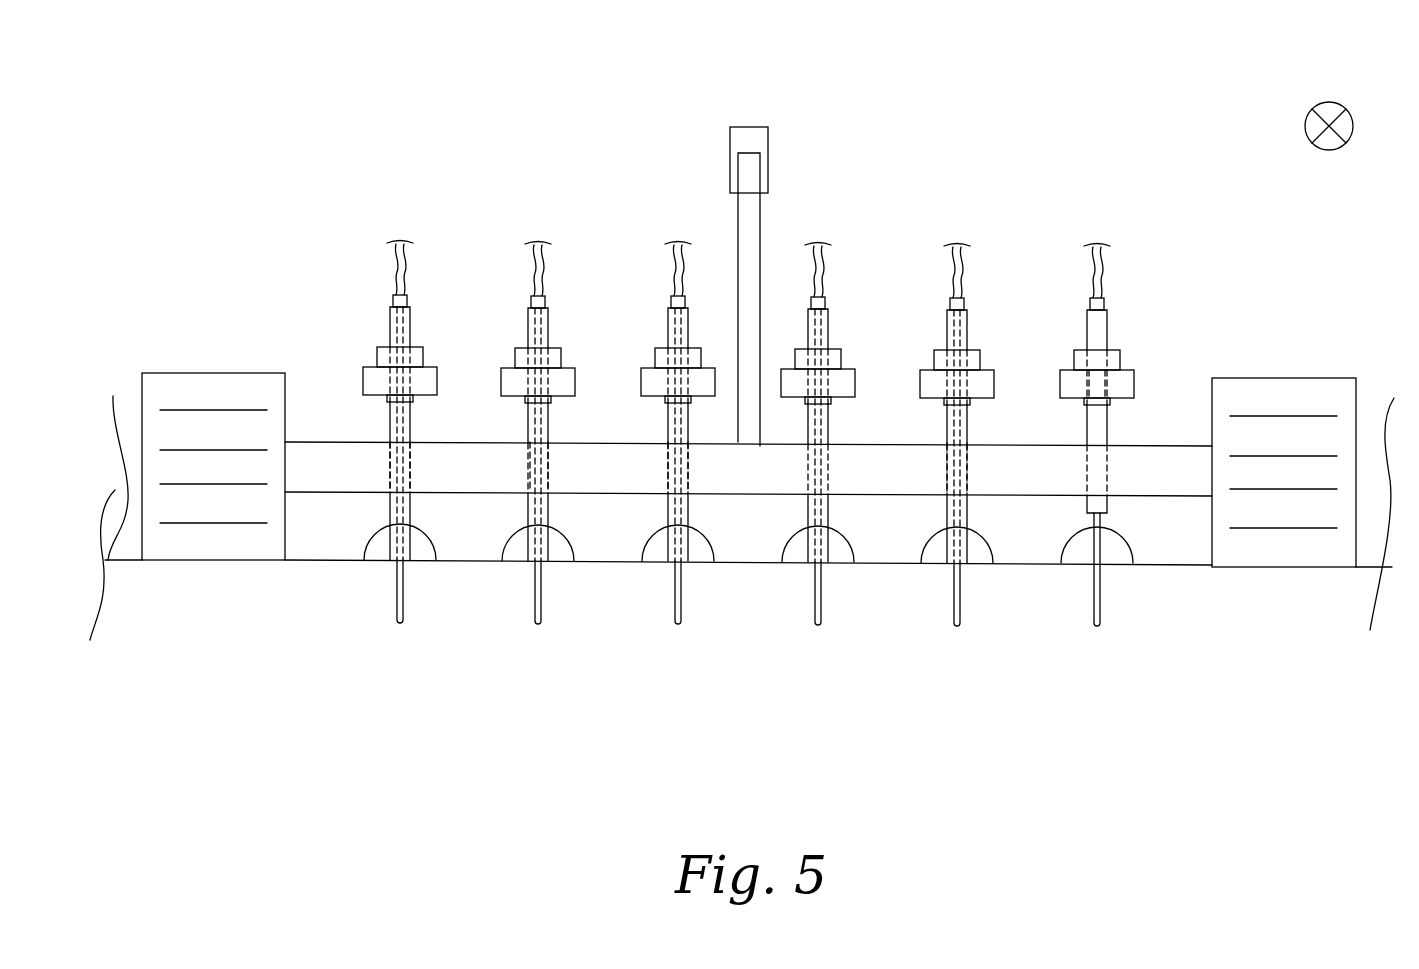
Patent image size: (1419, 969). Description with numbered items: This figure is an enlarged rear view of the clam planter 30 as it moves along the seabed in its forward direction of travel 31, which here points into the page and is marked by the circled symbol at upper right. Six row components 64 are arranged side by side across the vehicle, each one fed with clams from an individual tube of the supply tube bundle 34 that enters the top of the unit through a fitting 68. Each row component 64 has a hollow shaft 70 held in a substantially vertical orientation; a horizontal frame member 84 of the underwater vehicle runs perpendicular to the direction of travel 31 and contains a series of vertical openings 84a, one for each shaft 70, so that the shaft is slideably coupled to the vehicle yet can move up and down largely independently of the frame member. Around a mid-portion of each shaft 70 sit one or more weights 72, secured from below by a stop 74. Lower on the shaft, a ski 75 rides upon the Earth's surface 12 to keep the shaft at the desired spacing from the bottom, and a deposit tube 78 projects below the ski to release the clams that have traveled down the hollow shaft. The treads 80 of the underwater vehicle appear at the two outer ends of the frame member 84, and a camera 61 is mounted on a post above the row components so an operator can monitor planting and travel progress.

The Earth's surface 12 is at (742, 506).
The clam planter 30 is at (522, 140).
The forward direction of travel 31 is at (1318, 103).
The supply tube bundle 34 is at (410, 272).
The camera 61 is at (748, 127).
The row component 64 is at (709, 387).
The fitting 68 is at (392, 300).
The shaft 70 is at (410, 325).
The weight 72 is at (422, 358).
The stop 74 is at (385, 400).
The ski 75 is at (410, 522).
The deposit tube 78 is at (393, 602).
The tread 80 is at (245, 373).
The frame member 84 is at (308, 442).
The vertical opening 84a is at (388, 460).